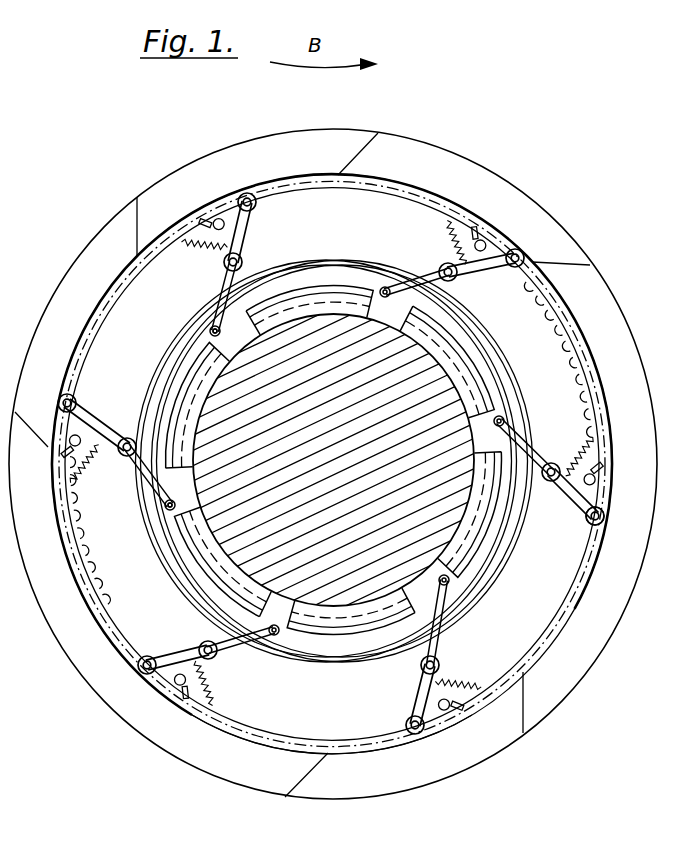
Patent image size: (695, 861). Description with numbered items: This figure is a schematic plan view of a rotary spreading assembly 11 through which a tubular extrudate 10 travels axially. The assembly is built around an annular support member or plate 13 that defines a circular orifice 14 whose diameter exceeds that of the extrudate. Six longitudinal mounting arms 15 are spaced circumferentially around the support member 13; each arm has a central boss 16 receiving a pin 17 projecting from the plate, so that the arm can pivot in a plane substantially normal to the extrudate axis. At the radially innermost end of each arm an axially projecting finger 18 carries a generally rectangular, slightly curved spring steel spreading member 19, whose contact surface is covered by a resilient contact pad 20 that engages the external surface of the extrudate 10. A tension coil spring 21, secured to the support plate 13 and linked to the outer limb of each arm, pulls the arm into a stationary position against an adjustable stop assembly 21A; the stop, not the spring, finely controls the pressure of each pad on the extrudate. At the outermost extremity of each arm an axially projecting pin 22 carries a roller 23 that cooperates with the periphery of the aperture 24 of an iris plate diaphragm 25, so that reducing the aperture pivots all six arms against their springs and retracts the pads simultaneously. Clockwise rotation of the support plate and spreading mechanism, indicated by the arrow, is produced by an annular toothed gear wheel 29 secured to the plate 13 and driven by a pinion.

The tubular extrudate 10 is at (497, 373).
The spreading assembly 11 is at (500, 157).
The annular support member 13 is at (542, 322).
The circular orifice 14 is at (575, 330).
The mounting arm 15 is at (254, 209).
The central boss 16 is at (566, 472).
The pin 17 is at (590, 519).
The finger 18 is at (207, 325).
The spreading member 19 is at (210, 338).
The contact pad 20 is at (212, 352).
The tension coil spring 21 is at (78, 470).
The adjustable stop assembly 21A is at (178, 692).
The pin 22 is at (590, 522).
The roller 23 is at (592, 530).
The aperture 24 is at (552, 640).
The iris plate diaphragm 25 is at (50, 593).
The toothed gear wheel 29 is at (590, 350).